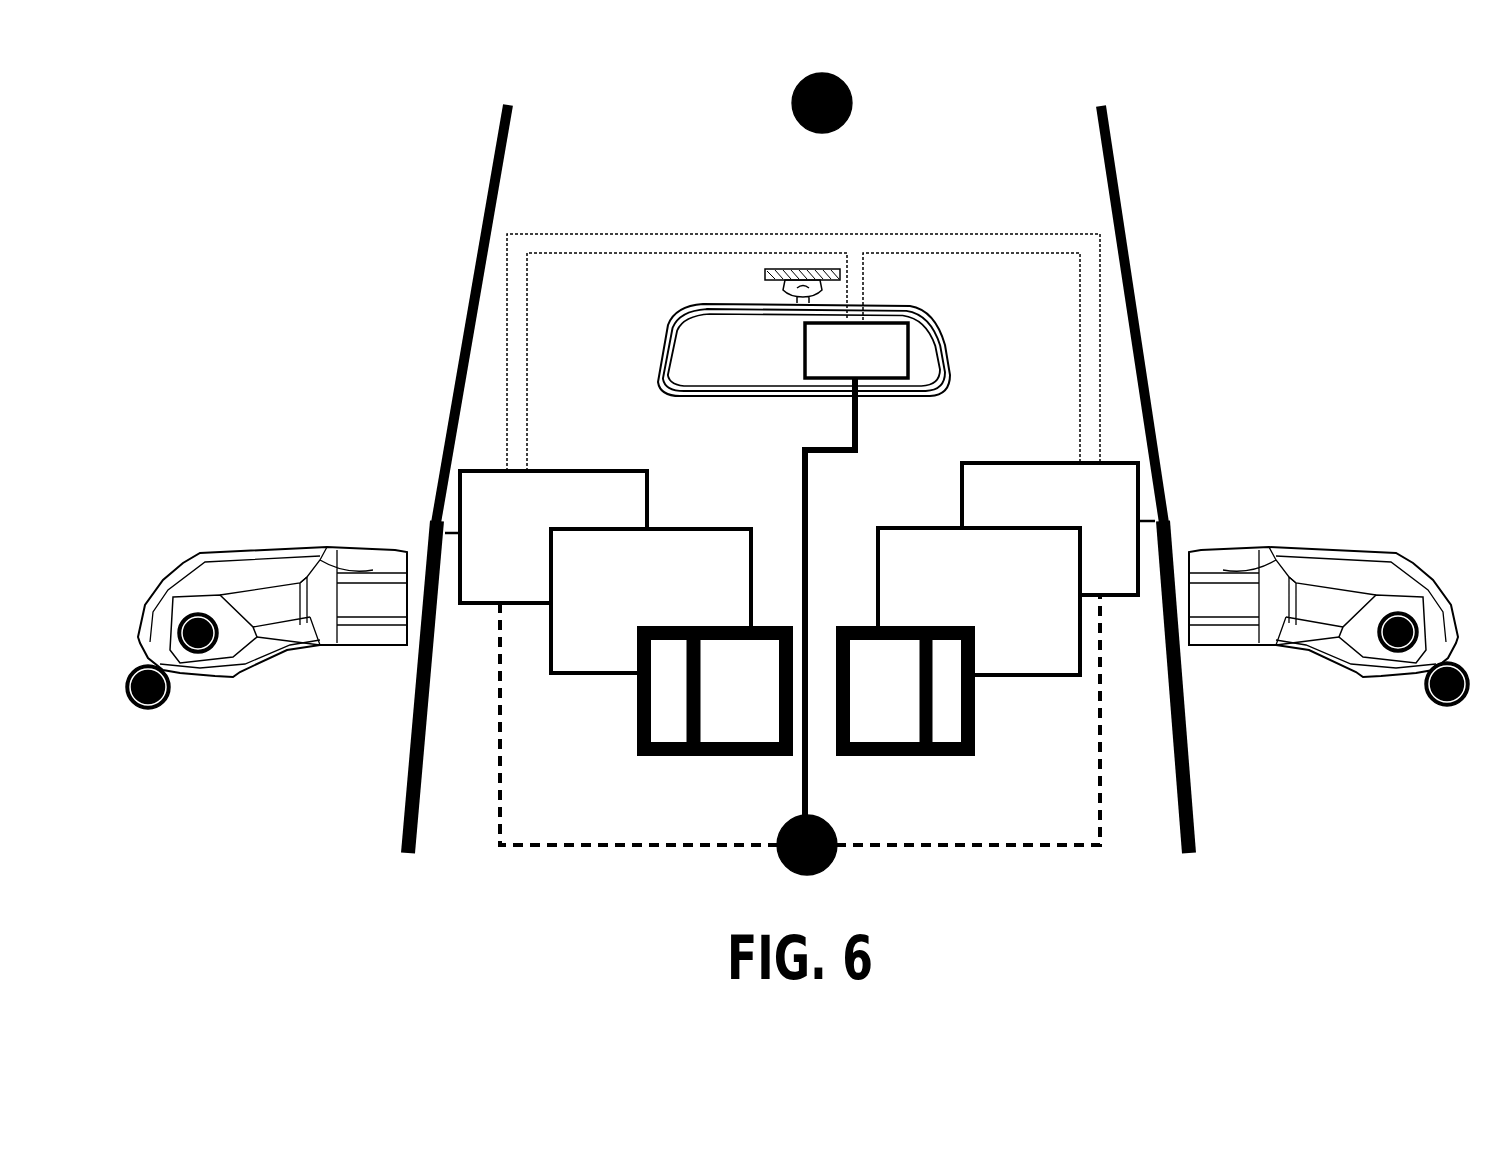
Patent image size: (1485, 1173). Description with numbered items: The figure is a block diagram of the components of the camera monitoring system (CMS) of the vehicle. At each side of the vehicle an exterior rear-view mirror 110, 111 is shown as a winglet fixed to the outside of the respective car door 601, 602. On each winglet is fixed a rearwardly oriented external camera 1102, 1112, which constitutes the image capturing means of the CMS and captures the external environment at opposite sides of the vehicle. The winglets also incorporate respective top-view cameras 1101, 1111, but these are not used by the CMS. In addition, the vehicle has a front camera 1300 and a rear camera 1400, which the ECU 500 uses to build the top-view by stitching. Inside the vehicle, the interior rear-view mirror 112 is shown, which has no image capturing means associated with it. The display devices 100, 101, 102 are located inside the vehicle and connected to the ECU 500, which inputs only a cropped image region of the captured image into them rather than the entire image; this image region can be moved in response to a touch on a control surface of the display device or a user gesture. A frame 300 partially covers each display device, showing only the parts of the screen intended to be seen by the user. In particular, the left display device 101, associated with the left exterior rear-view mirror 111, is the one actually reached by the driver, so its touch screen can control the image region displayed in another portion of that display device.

The car door 601 is at (490, 193).
The car door 602 is at (1117, 167).
The front camera 1300 is at (805, 132).
The interior rear-view mirror 112 is at (933, 338).
The display device 102 is at (818, 380).
The ECU 500 is at (563, 493).
The left display device 101 is at (585, 648).
The display device 100 is at (1040, 653).
The frame 300 is at (697, 755).
The rear camera 1400 is at (828, 865).
The left exterior rear-view mirror 111 is at (193, 575).
The external camera 1112 is at (210, 617).
The top-view camera 1111 is at (152, 710).
The exterior rear-view mirror 110 is at (1343, 563).
The external camera 1102 is at (1403, 612).
The top-view camera 1101 is at (1437, 703).